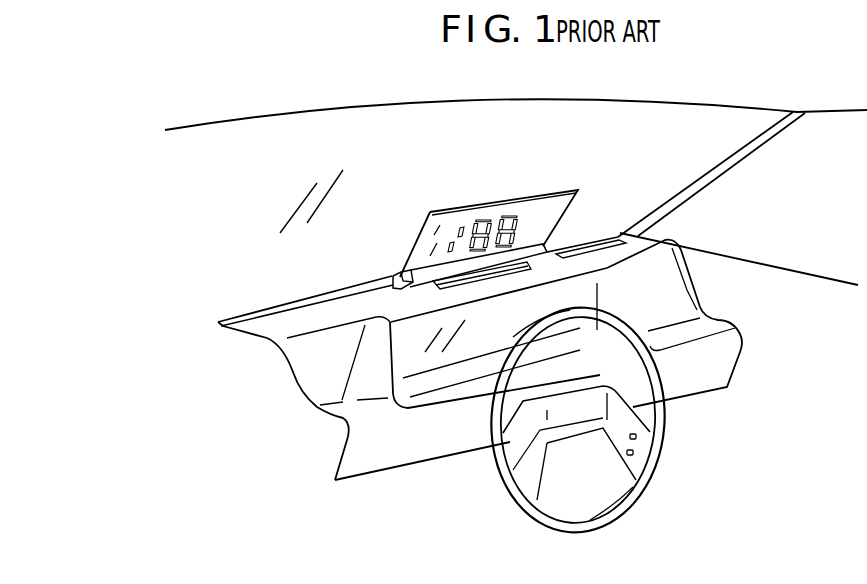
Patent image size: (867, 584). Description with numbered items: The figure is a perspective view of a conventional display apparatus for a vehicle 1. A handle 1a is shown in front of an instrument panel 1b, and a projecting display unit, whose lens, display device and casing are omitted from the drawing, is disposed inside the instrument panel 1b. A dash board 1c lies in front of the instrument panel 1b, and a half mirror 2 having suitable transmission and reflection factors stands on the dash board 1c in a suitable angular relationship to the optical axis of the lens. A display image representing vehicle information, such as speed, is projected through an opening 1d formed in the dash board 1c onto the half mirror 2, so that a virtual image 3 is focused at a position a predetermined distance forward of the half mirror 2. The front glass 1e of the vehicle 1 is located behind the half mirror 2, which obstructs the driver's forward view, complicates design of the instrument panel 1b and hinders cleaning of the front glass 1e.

The vehicle 1 is at (795, 290).
The handle 1a is at (660, 450).
The instrument panel 1b is at (590, 298).
The dash board 1c is at (387, 300).
The opening 1d is at (398, 262).
The front glass 1e is at (685, 115).
The half mirror 2 is at (562, 207).
The virtual image 3 is at (490, 217).